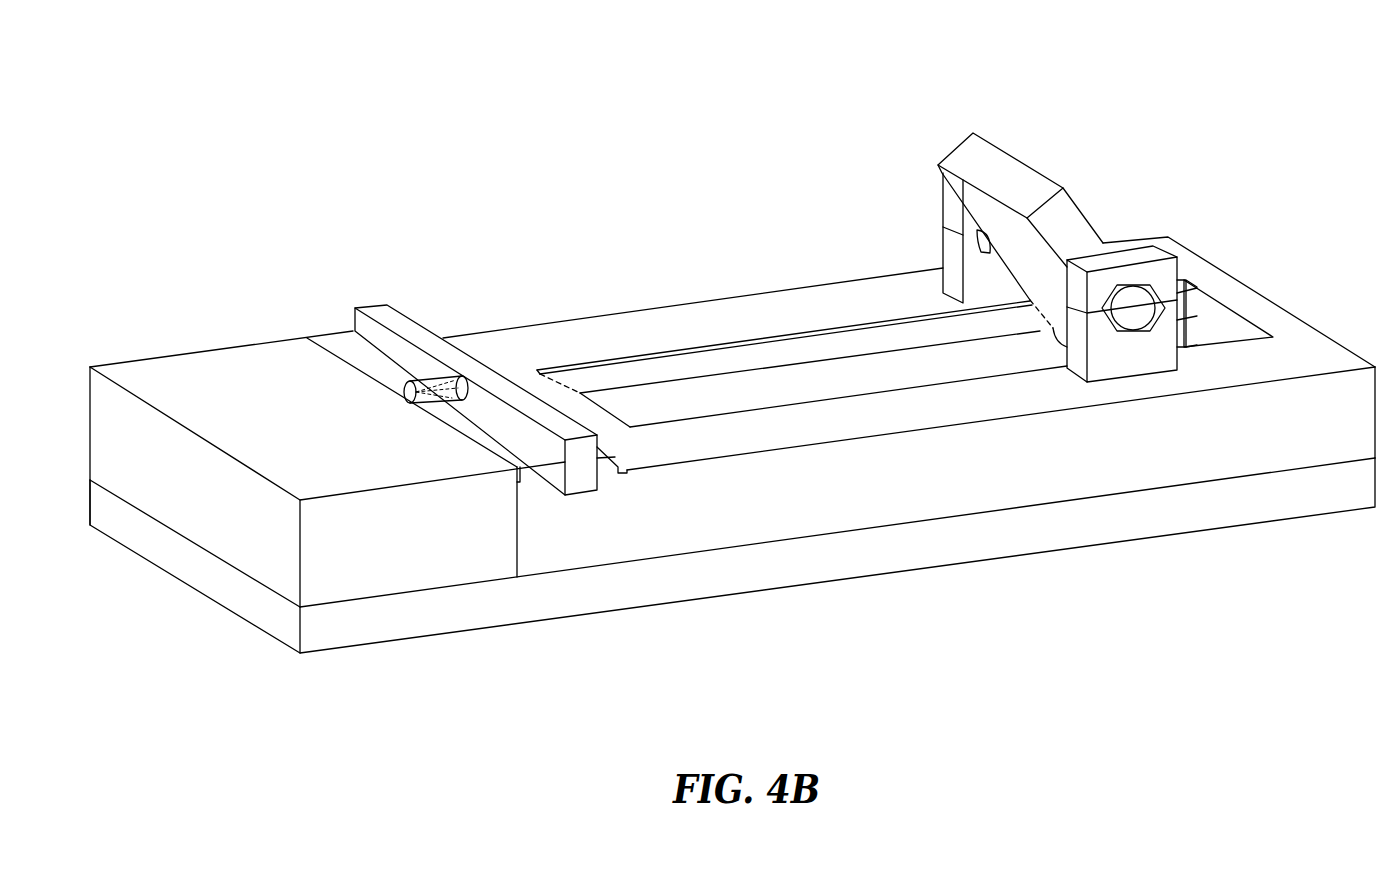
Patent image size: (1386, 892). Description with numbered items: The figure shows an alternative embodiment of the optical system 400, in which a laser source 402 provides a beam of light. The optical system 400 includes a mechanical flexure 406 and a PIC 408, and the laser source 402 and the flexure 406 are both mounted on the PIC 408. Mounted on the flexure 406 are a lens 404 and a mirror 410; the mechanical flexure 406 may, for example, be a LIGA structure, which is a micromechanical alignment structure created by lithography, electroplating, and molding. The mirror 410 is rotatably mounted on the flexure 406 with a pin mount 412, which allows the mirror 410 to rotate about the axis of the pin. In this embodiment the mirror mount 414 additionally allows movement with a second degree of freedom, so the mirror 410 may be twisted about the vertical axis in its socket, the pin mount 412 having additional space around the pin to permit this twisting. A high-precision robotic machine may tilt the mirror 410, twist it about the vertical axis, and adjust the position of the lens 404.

The optical system 400 is at (1175, 143).
The laser source 402 is at (232, 372).
The lens 404 is at (378, 310).
The mechanical flexure 406 is at (800, 518).
The PIC 408 is at (1130, 518).
The mirror 410 is at (972, 167).
The pin mount 412 is at (1133, 308).
The mirror mount 414 is at (1160, 270).